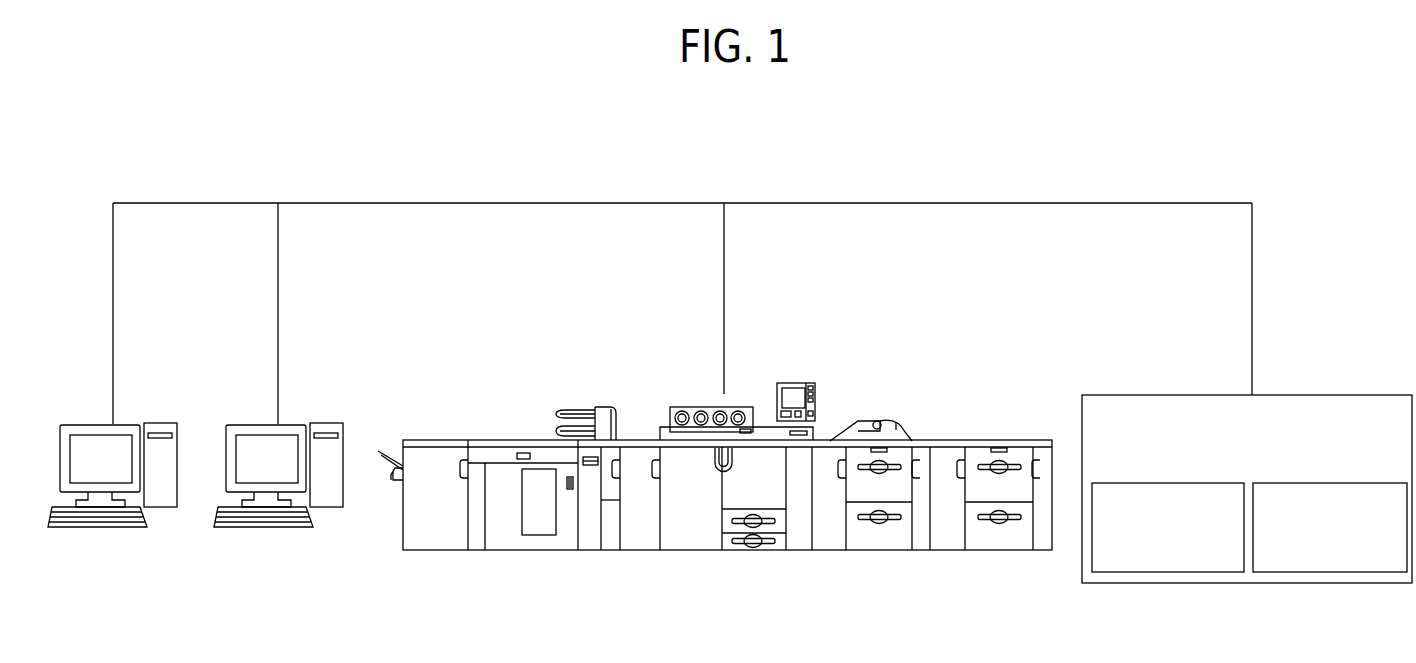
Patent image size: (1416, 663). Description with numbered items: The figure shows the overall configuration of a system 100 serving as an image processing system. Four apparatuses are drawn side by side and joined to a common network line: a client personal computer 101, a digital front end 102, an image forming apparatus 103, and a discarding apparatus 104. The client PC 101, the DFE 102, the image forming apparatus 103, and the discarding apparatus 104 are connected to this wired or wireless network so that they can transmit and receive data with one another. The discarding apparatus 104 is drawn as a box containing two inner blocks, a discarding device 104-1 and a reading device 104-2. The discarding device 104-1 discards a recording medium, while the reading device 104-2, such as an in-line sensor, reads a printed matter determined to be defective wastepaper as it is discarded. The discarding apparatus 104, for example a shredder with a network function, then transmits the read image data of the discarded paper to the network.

The system 100 is at (170, 112).
The client personal computer 101 is at (100, 528).
The digital front end 102 is at (266, 528).
The image forming apparatus 103 is at (738, 551).
The discarding apparatus 104 is at (1308, 395).
The discarding device 104-1 is at (1105, 483).
The reading device 104-2 is at (1265, 483).